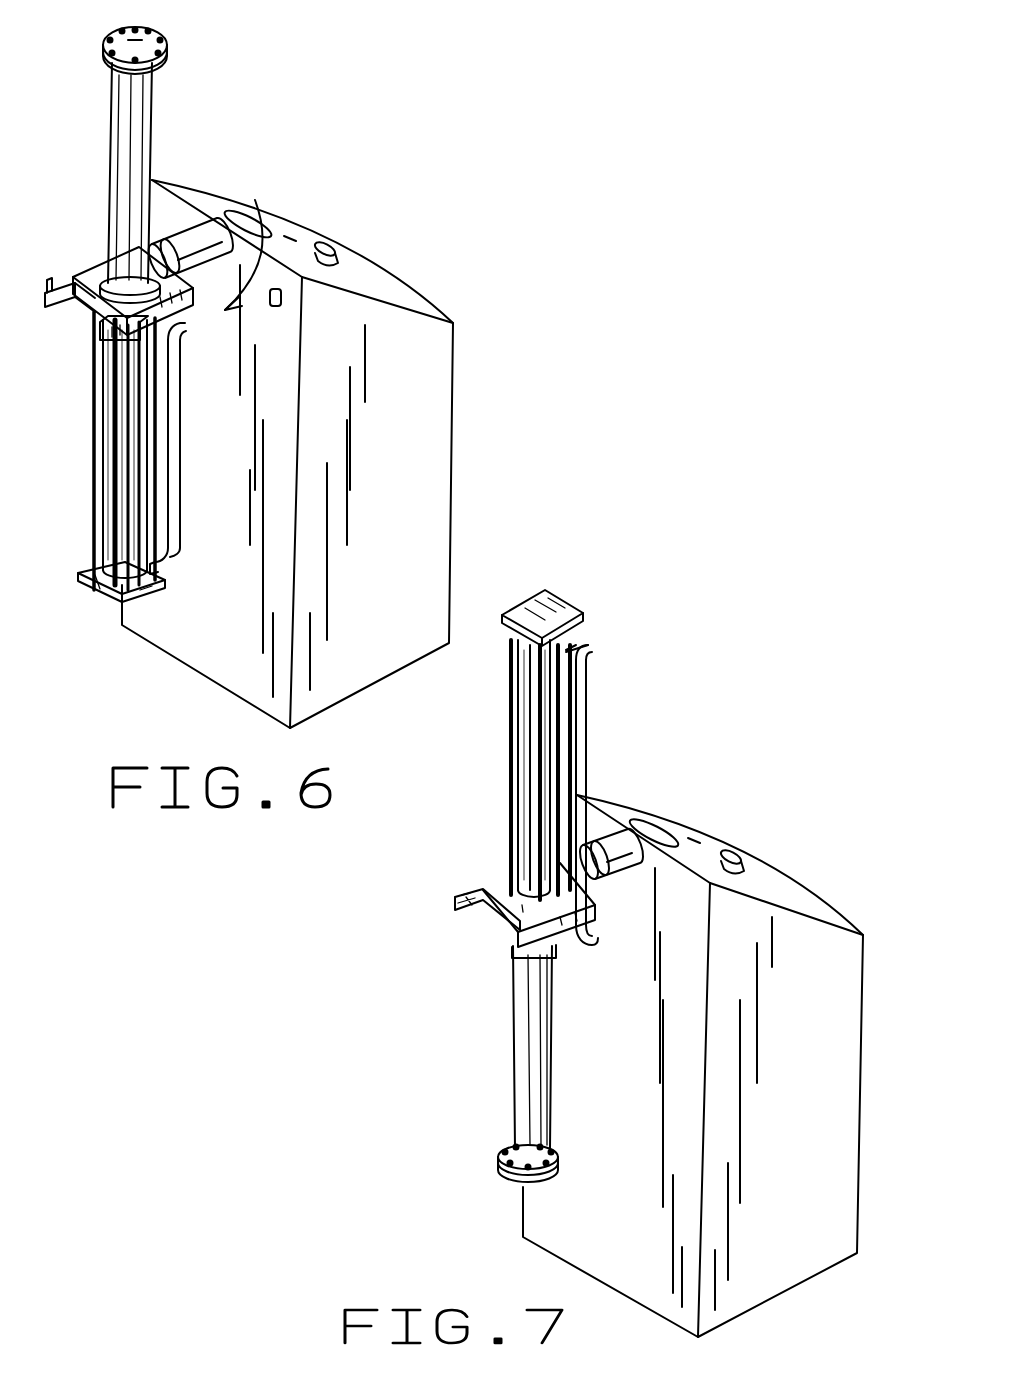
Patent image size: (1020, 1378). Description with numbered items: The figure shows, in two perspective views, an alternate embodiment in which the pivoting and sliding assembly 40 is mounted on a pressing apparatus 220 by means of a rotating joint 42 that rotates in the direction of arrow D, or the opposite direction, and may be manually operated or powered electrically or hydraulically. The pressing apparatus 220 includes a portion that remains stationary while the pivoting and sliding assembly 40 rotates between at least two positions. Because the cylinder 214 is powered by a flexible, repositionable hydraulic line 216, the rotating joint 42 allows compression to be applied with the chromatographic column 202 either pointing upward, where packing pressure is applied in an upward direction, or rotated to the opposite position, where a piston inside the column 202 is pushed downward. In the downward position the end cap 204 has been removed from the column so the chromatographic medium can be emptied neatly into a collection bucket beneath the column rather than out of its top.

In FIG. 6, the pivoting and sliding assembly 40 is at (82, 320).
In FIG. 7, the pivoting and sliding assembly 40 is at (482, 928).
In FIG. 6, the rotating joint 42 is at (201, 218).
In FIG. 7, the rotating joint 42 is at (603, 843).
In FIG. 6, the chromatographic column 202 is at (140, 140).
In FIG. 7, the chromatographic column 202 is at (528, 1013).
In FIG. 6, the end cap 204 is at (140, 42).
In FIG. 7, the end cap 204 is at (510, 1183).
In FIG. 6, the cylinder 214 is at (120, 487).
In FIG. 7, the cylinder 214 is at (535, 693).
In FIG. 6, the hydraulic line 216 is at (165, 505).
In FIG. 7, the hydraulic line 216 is at (587, 708).
In FIG. 6, the pressing apparatus 220 is at (457, 414).
In FIG. 7, the pressing apparatus 220 is at (693, 1062).